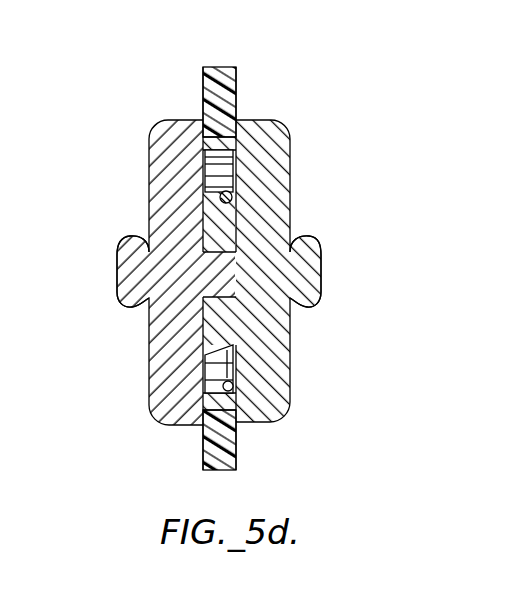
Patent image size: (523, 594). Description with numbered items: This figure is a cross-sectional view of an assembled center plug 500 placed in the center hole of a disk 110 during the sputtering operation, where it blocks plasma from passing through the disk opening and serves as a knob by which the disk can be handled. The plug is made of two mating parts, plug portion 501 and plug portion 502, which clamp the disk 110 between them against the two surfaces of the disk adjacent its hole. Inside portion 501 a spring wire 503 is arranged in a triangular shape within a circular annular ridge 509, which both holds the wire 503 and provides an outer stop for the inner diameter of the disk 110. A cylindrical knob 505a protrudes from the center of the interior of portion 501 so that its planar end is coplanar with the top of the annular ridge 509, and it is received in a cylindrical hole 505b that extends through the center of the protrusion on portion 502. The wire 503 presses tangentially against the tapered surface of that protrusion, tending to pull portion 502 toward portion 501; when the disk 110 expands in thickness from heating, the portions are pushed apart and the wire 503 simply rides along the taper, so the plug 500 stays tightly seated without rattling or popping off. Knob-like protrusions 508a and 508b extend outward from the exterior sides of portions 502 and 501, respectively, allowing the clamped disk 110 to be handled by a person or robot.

The center plug 500 is at (222, 257).
The plug portion 501 is at (171, 140).
The plug portion 502 is at (267, 140).
The spring wire section 503 is at (208, 181).
The cylindrical knob 505a is at (224, 268).
The cylindrical hole 505b is at (235, 202).
The knob-like protrusion 508a is at (321, 270).
The knob-like protrusion 508b is at (119, 266).
The annular ridge 509 is at (228, 140).
The disk 110 is at (227, 92).